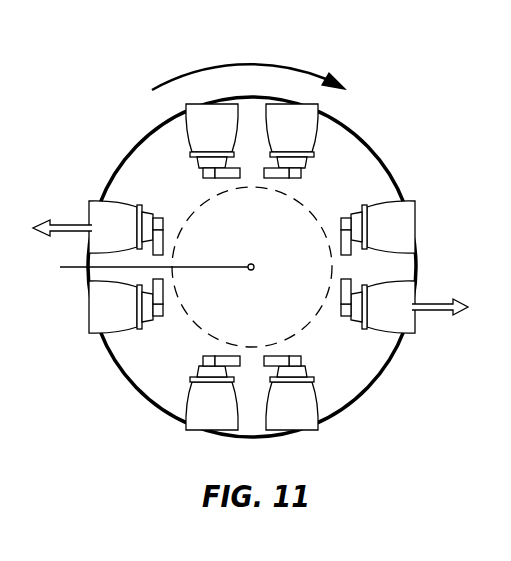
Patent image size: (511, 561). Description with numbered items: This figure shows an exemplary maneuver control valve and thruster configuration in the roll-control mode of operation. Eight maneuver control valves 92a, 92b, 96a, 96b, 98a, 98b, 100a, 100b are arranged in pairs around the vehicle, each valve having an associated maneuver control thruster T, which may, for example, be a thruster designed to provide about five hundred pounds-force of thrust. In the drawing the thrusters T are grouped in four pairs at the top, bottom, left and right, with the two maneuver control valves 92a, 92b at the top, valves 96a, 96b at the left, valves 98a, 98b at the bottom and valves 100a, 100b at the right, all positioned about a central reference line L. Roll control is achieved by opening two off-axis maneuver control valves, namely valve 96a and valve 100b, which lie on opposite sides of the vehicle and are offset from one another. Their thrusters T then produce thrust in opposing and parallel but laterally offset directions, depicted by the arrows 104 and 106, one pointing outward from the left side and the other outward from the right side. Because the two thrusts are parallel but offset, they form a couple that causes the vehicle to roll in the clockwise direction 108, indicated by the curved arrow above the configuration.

The maneuver control thruster T is at (113, 223).
The maneuver control valve 92a is at (283, 177).
The maneuver control valve 92b is at (210, 178).
The maneuver control valve 96a is at (165, 235).
The maneuver control valve 96b is at (165, 296).
The maneuver control valve 98a is at (286, 355).
The maneuver control valve 98b is at (208, 357).
The maneuver control valve 100a is at (342, 227).
The maneuver control valve 100b is at (342, 301).
The centerline L is at (148, 270).
The thrust direction arrow 104 is at (64, 226).
The thrust direction arrow 106 is at (440, 300).
The clockwise roll direction 108 is at (257, 64).